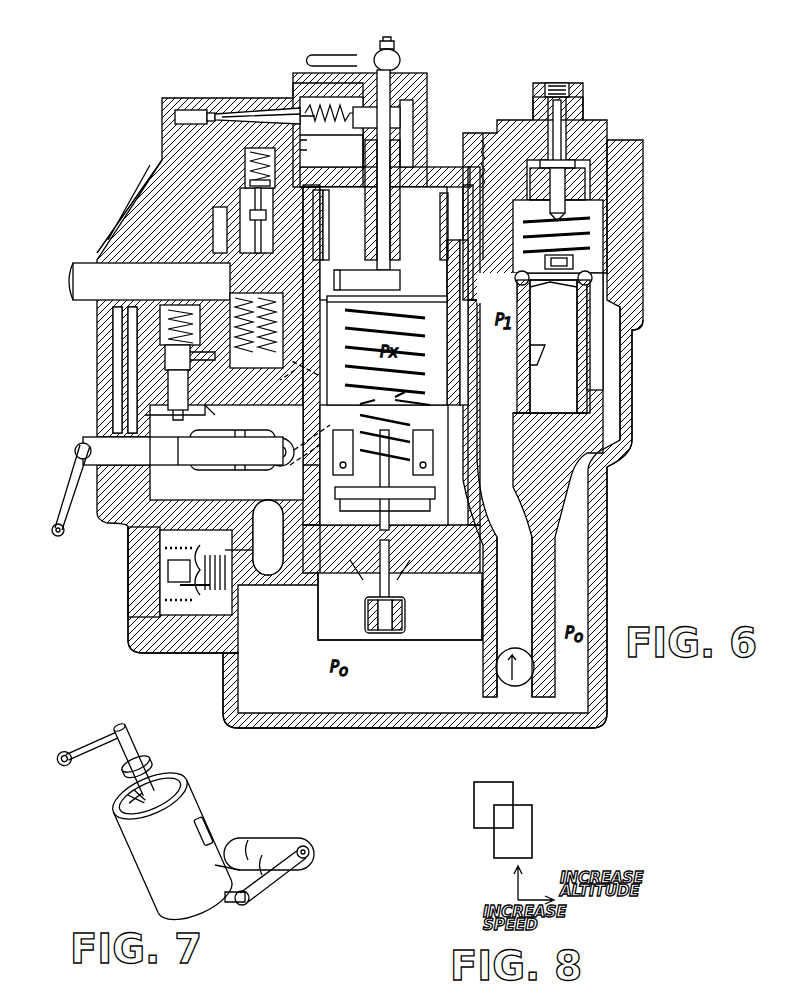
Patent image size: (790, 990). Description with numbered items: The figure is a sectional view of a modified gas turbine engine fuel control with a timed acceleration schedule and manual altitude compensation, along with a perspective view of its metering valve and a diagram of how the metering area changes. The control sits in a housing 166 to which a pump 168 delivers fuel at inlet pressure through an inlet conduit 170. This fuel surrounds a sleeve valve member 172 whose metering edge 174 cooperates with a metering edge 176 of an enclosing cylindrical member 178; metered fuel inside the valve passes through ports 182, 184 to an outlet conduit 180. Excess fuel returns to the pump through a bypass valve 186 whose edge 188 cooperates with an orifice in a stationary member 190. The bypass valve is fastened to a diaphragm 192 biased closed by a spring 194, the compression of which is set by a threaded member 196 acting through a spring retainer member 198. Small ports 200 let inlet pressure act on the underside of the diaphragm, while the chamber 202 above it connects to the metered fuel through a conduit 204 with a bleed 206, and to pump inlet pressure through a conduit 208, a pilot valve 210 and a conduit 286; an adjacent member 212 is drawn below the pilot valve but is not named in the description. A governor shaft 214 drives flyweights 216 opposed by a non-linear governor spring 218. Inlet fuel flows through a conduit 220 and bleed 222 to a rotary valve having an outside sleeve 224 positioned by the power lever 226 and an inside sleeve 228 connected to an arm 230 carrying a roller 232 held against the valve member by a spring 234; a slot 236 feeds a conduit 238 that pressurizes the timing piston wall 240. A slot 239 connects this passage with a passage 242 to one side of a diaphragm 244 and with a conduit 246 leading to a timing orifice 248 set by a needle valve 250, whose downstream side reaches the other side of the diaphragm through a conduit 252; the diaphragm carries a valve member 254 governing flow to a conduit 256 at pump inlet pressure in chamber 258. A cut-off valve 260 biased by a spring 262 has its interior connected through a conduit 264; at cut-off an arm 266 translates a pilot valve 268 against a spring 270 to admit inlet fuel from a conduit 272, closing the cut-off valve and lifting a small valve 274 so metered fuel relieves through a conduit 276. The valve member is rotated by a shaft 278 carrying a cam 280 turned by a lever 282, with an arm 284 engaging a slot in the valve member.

In FIG. 6, the housing 166 is at (607, 533).
In FIG. 6, the pump 168 is at (496, 671).
In FIG. 6, the inlet conduit 170 is at (528, 589).
In FIG. 6, the sleeve valve member 172 is at (438, 362).
In FIG. 7, the sleeve valve member 172 is at (195, 836).
In FIG. 6, the metering edge 174 is at (462, 287).
In FIG. 7, the metering edge 174 is at (232, 826).
In FIG. 8, the metering edge 174 is at (532, 835).
In FIG. 6, the metering edge 176 is at (450, 262).
In FIG. 8, the metering edge 176 is at (513, 800).
In FIG. 6, the cylindrical member 178 is at (405, 258).
In FIG. 6, the outlet conduit 180 is at (73, 274).
In FIG. 6, the port 182 is at (342, 225).
In FIG. 6, the port 184 is at (313, 243).
In FIG. 6, the bypass valve 186 is at (521, 340).
In FIG. 6, the edge 188 is at (525, 360).
In FIG. 6, the stationary member 190 is at (568, 395).
In FIG. 6, the diaphragm 192 is at (593, 263).
In FIG. 6, the spring 194 is at (580, 226).
In FIG. 6, the threaded member 196 is at (585, 102).
In FIG. 6, the spring retainer member 198 is at (577, 173).
In FIG. 6, the small ports 200 is at (575, 290).
In FIG. 6, the chamber 202 is at (592, 210).
In FIG. 6, the conduit 204 is at (462, 185).
In FIG. 6, the bleed 206 is at (478, 157).
In FIG. 6, the conduit 208 is at (622, 370).
In FIG. 6, the pilot valve 210 is at (398, 592).
In FIG. 6, the rod 212 is at (388, 640).
In FIG. 6, the shaft 214 is at (405, 620).
In FIG. 6, the governor flyweights 216 is at (422, 440).
In FIG. 6, the non-linear governor spring 218 is at (391, 345).
In FIG. 6, the conduit 220 is at (305, 395).
In FIG. 6, the bleed 222 is at (270, 377).
In FIG. 6, the outside sleeve 224 is at (128, 542).
In FIG. 7, the outside sleeve 224 is at (285, 838).
In FIG. 6, the power lever 226 is at (68, 490).
In FIG. 6, the inside sleeve 228 is at (262, 465).
In FIG. 7, the inside sleeve 228 is at (310, 850).
In FIG. 6, the arm 230 is at (280, 452).
In FIG. 7, the arm 230 is at (278, 868).
In FIG. 6, the roller 232 is at (400, 396).
In FIG. 7, the roller 232 is at (248, 903).
In FIG. 6, the spring 234 is at (384, 394).
In FIG. 6, the slot 236 is at (207, 413).
In FIG. 6, the conduit 238 is at (95, 425).
In FIG. 6, the slot 239 is at (265, 537).
In FIG. 6, the wall 240 is at (385, 323).
In FIG. 6, the passage 242 is at (247, 558).
In FIG. 6, the diaphragm 244 is at (190, 612).
In FIG. 6, the conduit 246 is at (217, 167).
In FIG. 6, the timing orifice 248 is at (215, 98).
In FIG. 6, the needle valve 250 is at (265, 112).
In FIG. 6, the conduit 252 is at (150, 198).
In FIG. 6, the valve member 254 is at (175, 570).
In FIG. 6, the conduit 256 is at (147, 600).
In FIG. 6, the chamber 258 is at (298, 664).
In FIG. 6, the cut-off valve 260 is at (252, 290).
In FIG. 6, the spring 262 is at (262, 295).
In FIG. 6, the conduit 264 is at (185, 375).
In FIG. 6, the arm 266 is at (78, 446).
In FIG. 6, the pilot valve 268 is at (180, 347).
In FIG. 6, the spring 270 is at (193, 323).
In FIG. 6, the conduit 272 is at (205, 312).
In FIG. 6, the small valve 274 is at (262, 222).
In FIG. 6, the conduit 276 is at (223, 200).
In FIG. 6, the shaft 278 is at (383, 140).
In FIG. 7, the shaft 278 is at (163, 746).
In FIG. 6, the cam 280 is at (397, 113).
In FIG. 7, the cam 280 is at (93, 770).
In FIG. 6, the lever 282 is at (347, 57).
In FIG. 7, the lever 282 is at (74, 719).
In FIG. 6, the arm 284 is at (360, 272).
In FIG. 7, the arm 284 is at (89, 804).
In FIG. 6, the conduit 286 is at (340, 578).